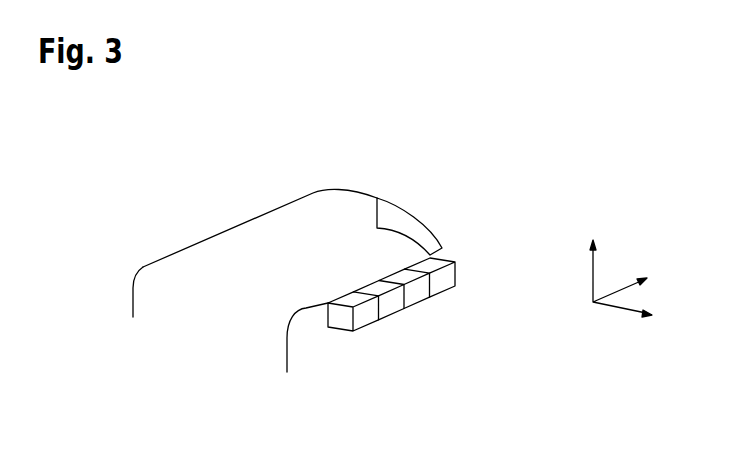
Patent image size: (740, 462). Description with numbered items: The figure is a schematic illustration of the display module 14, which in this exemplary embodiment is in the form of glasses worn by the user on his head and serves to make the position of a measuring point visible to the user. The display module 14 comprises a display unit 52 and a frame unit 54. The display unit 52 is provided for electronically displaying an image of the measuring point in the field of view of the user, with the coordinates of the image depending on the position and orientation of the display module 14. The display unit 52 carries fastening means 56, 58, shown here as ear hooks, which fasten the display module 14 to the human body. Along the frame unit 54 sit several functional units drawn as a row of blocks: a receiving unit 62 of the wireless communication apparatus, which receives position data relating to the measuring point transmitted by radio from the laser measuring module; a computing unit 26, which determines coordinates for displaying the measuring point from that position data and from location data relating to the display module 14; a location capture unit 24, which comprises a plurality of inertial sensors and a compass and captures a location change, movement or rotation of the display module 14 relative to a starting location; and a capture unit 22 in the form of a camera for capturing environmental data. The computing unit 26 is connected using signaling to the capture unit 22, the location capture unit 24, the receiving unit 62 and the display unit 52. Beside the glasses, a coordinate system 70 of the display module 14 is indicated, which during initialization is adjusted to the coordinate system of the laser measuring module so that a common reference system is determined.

The display module 14 is at (183, 187).
The display unit 52 is at (387, 218).
The frame unit 54 is at (273, 210).
The fastening means 56 is at (132, 293).
The fastening means 58 is at (285, 352).
The receiving unit 62 is at (360, 320).
The computing unit 26 is at (392, 307).
The location capture unit 24 is at (413, 297).
The capture unit 22 is at (446, 285).
The coordinate system 70 is at (613, 308).